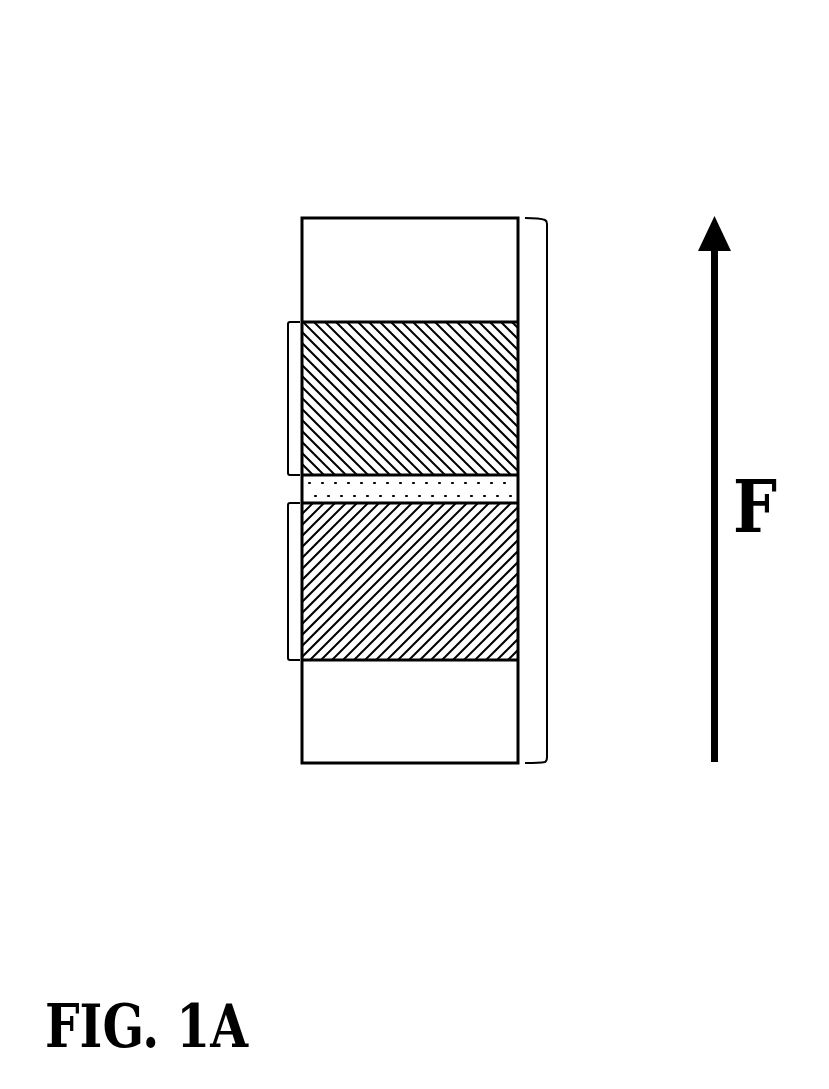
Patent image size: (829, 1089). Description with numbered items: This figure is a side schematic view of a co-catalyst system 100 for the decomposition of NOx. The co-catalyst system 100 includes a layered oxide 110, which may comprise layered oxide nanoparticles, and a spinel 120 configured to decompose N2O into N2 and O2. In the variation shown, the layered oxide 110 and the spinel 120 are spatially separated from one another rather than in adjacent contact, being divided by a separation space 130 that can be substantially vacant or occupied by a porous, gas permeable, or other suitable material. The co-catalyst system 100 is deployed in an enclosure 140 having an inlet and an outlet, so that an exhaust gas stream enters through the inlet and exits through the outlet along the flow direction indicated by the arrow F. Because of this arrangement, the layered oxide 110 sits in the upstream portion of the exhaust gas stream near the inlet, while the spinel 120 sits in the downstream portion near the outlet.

The co-catalyst system 100 is at (636, 108).
The layered oxide 110 is at (288, 581).
The spinel 120 is at (288, 398).
The separation space 130 is at (280, 488).
The enclosure 140 is at (547, 490).